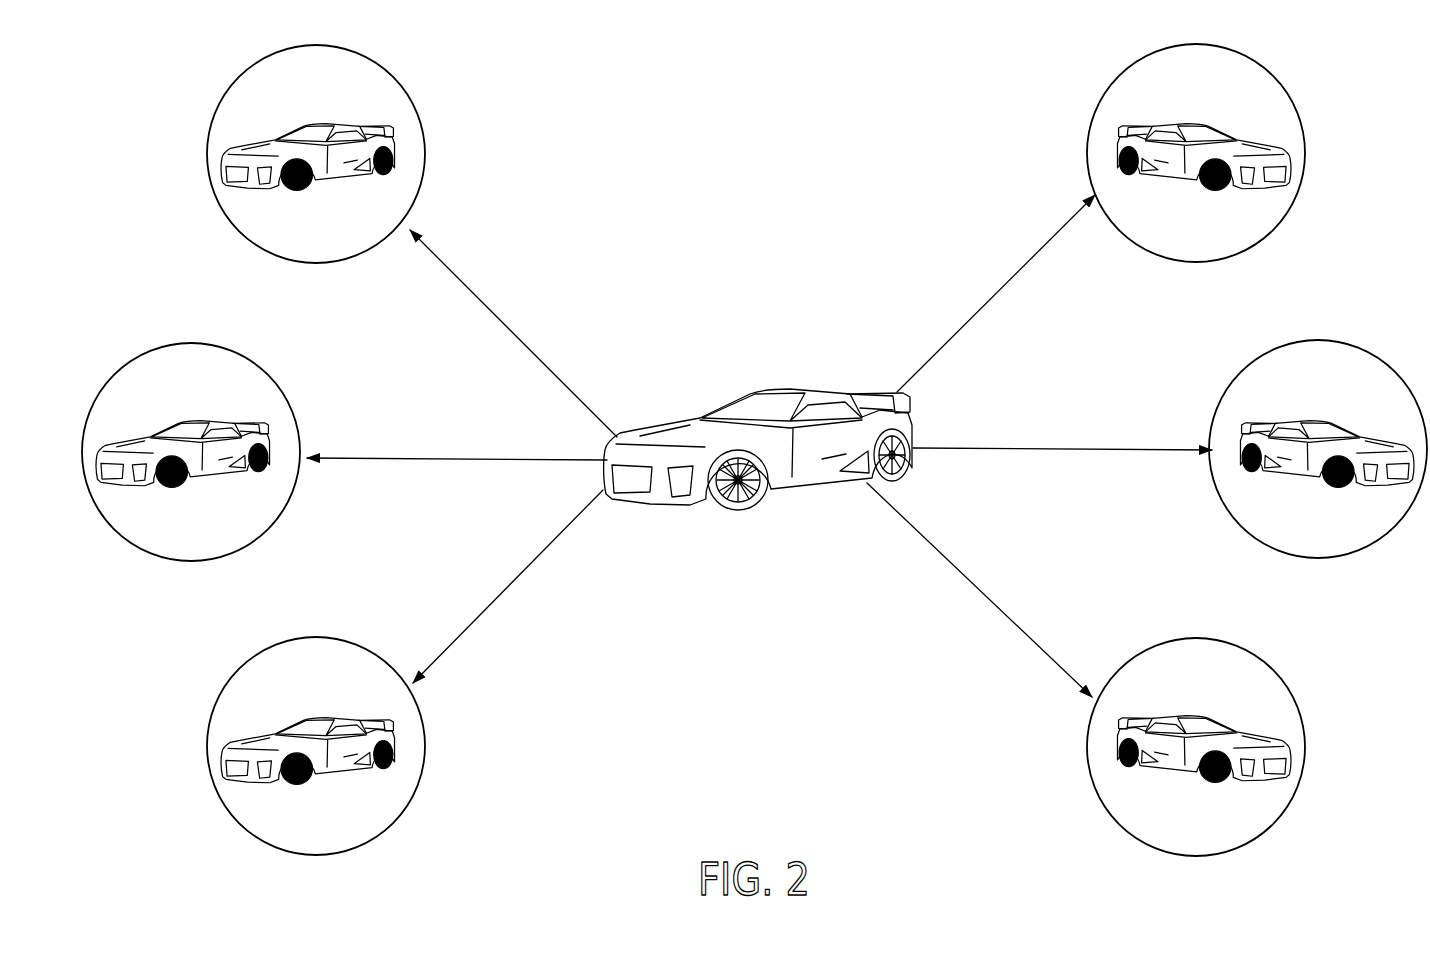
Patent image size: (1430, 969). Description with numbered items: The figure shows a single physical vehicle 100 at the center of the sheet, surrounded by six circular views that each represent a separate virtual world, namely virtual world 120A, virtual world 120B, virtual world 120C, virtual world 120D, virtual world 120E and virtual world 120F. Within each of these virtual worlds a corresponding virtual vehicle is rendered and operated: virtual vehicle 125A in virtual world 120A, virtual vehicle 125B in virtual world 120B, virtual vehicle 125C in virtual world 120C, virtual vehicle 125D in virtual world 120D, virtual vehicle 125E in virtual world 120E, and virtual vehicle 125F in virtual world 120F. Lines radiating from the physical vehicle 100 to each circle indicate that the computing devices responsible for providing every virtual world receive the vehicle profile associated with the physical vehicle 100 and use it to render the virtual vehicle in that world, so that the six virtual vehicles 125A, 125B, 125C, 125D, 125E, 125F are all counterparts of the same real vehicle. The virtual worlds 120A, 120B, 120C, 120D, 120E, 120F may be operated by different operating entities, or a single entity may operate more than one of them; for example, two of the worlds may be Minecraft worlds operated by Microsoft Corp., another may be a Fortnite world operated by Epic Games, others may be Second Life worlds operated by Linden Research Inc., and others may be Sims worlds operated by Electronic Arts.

The physical vehicle 100 is at (690, 342).
The virtual world 120A is at (208, 156).
The virtual world 120B is at (1280, 85).
The virtual world 120C is at (103, 392).
The virtual world 120D is at (1375, 358).
The virtual world 120E is at (208, 748).
The virtual world 120F is at (1275, 673).
The virtual vehicle 125A is at (318, 122).
The virtual vehicle 125B is at (1195, 123).
The virtual vehicle 125C is at (185, 420).
The virtual vehicle 125D is at (1320, 420).
The virtual vehicle 125E is at (320, 717).
The virtual vehicle 125F is at (1200, 717).